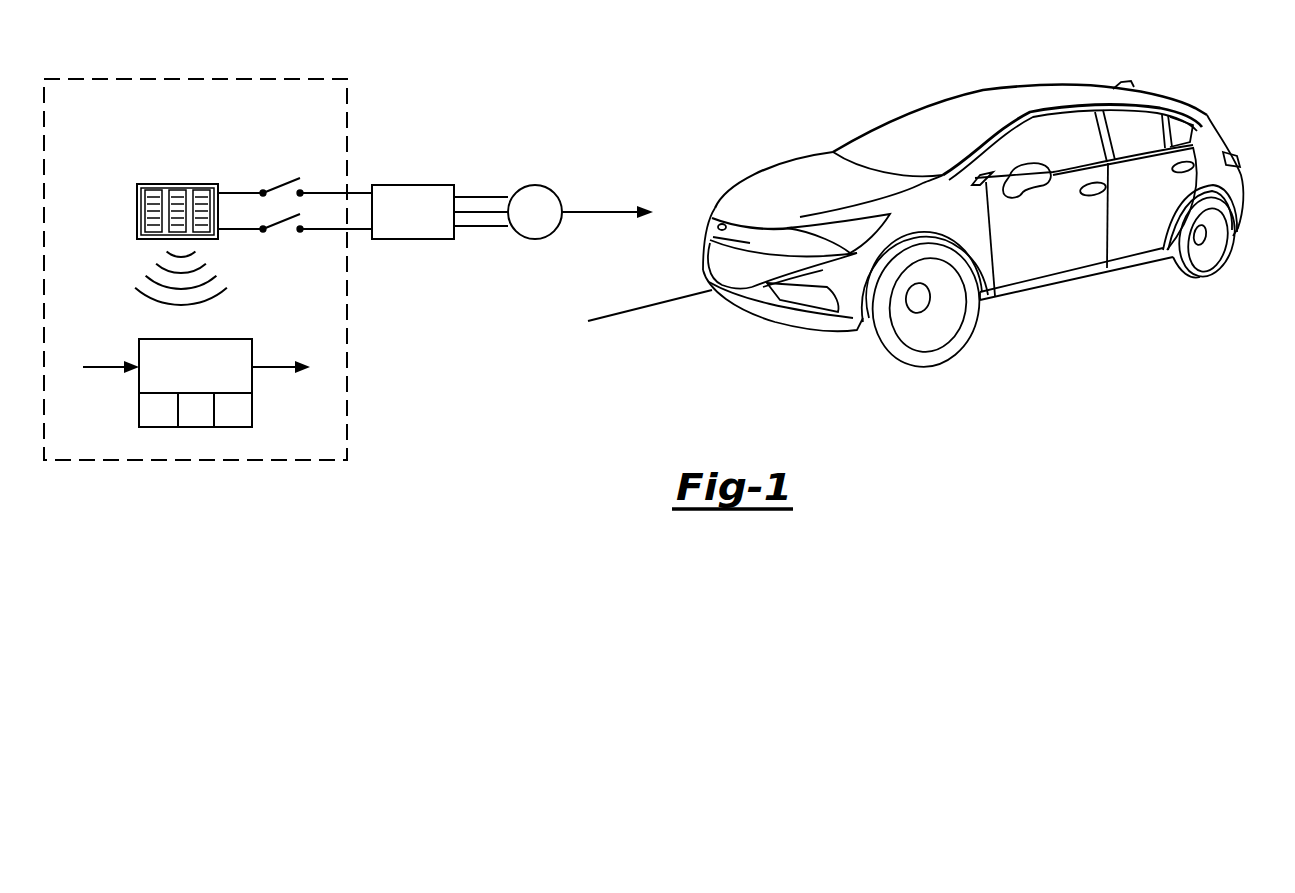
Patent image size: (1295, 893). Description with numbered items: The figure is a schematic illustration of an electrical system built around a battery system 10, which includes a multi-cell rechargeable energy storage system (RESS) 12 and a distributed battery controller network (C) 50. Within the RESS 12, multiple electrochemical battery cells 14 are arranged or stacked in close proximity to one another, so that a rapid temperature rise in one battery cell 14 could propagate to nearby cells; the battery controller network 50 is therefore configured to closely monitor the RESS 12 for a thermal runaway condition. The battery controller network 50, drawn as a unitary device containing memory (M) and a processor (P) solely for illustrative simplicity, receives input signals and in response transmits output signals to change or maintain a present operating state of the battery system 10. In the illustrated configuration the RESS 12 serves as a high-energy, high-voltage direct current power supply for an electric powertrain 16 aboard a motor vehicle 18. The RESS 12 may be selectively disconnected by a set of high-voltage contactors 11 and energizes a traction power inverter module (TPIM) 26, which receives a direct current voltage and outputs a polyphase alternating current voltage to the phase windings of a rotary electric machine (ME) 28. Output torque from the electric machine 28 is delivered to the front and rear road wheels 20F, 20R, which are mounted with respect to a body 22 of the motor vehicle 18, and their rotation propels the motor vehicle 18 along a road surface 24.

The battery system 10 is at (180, 79).
The high-voltage contactors 11 is at (270, 154).
The rechargeable energy storage system 12 is at (149, 214).
The battery cell 14 is at (141, 190).
The electric powertrain 16 is at (545, 50).
The motor vehicle 18 is at (1157, 48).
The front road wheels 20F is at (928, 356).
The rear road wheels 20R is at (1205, 270).
The body 22 is at (1028, 253).
The road surface 24 is at (694, 330).
The traction power inverter module 26 is at (413, 239).
The rotary electric machine 28 is at (537, 239).
The battery controller network 50 is at (215, 340).